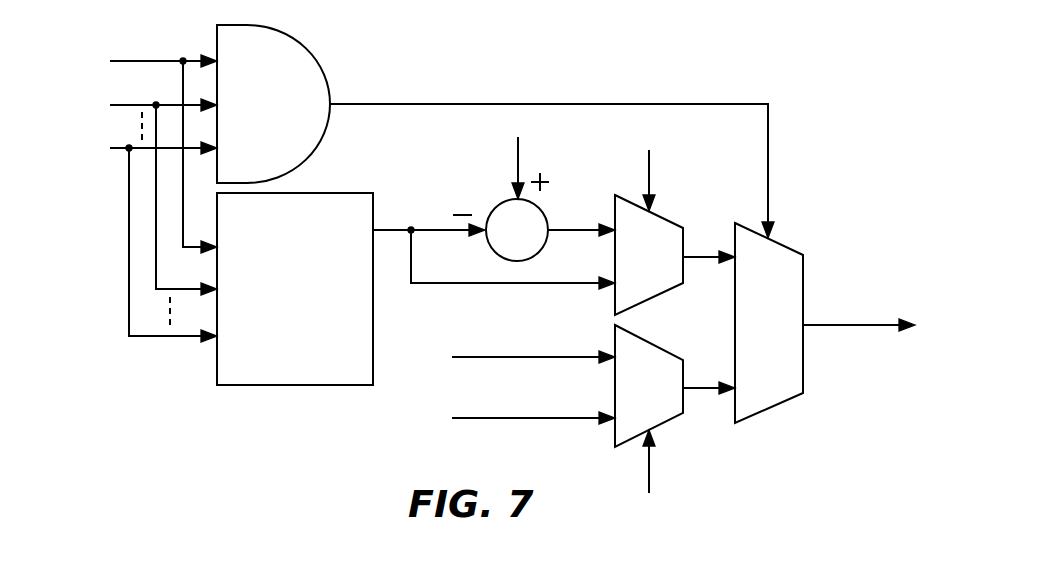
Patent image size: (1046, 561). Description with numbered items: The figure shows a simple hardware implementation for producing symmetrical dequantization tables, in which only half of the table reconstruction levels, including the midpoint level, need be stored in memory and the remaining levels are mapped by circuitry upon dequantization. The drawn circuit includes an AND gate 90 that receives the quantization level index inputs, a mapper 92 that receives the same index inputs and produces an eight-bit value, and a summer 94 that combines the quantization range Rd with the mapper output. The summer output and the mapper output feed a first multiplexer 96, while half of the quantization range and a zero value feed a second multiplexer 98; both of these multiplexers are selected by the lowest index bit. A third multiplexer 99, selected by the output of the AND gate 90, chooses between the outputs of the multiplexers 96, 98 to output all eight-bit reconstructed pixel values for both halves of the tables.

The AND gate 90 is at (320, 73).
The mapper 92 is at (320, 192).
The summer 94 is at (502, 258).
The multiplexer 96 is at (683, 233).
The multiplexer 98 is at (683, 362).
The multiplexer 99 is at (803, 257).